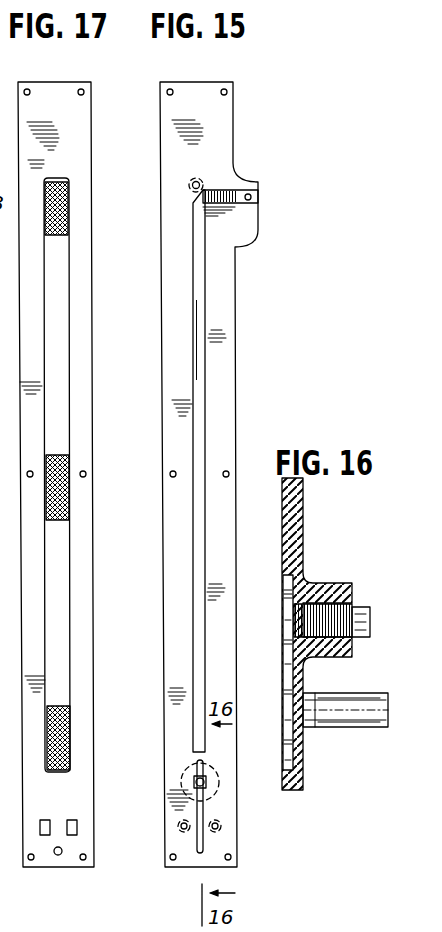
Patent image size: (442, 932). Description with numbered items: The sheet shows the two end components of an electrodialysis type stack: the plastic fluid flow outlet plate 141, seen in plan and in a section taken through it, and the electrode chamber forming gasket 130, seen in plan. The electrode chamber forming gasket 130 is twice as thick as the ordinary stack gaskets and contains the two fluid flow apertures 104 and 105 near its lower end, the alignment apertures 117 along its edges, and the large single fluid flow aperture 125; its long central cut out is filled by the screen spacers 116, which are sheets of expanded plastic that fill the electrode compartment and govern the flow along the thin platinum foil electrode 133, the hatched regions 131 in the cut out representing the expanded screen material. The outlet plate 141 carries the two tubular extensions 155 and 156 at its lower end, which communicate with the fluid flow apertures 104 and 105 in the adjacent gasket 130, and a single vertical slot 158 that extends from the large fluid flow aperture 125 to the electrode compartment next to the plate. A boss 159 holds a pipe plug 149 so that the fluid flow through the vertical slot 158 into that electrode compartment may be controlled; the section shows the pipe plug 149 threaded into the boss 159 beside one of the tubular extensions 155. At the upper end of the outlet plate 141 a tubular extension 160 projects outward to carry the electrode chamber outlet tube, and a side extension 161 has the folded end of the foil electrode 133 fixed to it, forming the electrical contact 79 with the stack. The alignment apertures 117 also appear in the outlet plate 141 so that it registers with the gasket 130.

In FIG. 15, the electrical contact 79 is at (256, 210).
In FIG. 17, the fluid flow aperture 104 is at (45, 820).
In FIG. 17, the fluid flow aperture 105 is at (72, 820).
In FIG. 17, the screen spacer 116 is at (55, 434).
In FIG. 17, the alignment aperture 117 is at (70, 72).
In FIG. 15, the alignment aperture 117 is at (213, 72).
In FIG. 17, the large single fluid flow aperture 125 is at (55, 853).
In FIG. 17, the electrode chamber forming gasket 130 is at (87, 692).
In FIG. 17, the knurled surface 131 is at (62, 603).
In FIG. 15, the electrode 133 is at (200, 352).
In FIG. 16, the electrode 133 is at (281, 536).
In FIG. 15, the outlet plate 141 is at (170, 526).
In FIG. 16, the outlet plate 141 is at (294, 514).
In FIG. 15, the pipe plug 149 is at (193, 784).
In FIG. 16, the pipe plug 149 is at (372, 624).
In FIG. 15, the tubular extension 155 is at (181, 830).
In FIG. 16, the tubular extension 155 is at (366, 700).
In FIG. 15, the tubular extension 156 is at (220, 830).
In FIG. 15, the vertical slot 158 is at (205, 808).
In FIG. 16, the vertical slot 158 is at (284, 705).
In FIG. 15, the boss 159 is at (192, 772).
In FIG. 16, the boss 159 is at (338, 590).
In FIG. 15, the tubular extension 160 is at (217, 168).
In FIG. 15, the side extension 161 is at (256, 190).